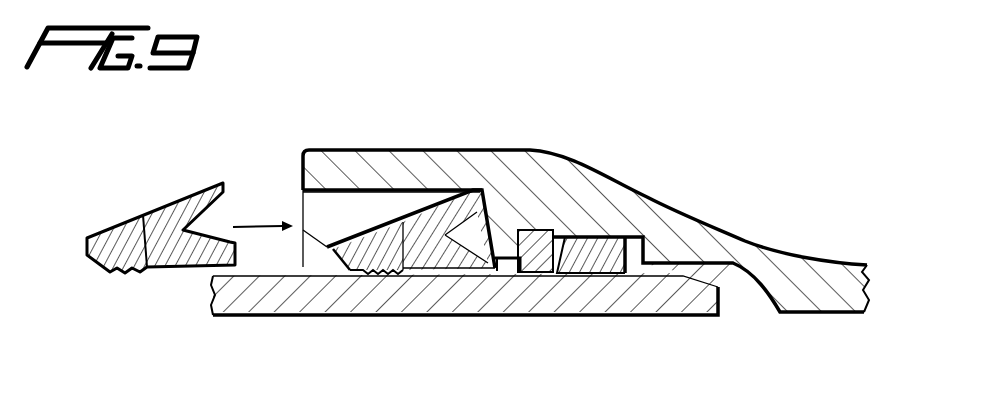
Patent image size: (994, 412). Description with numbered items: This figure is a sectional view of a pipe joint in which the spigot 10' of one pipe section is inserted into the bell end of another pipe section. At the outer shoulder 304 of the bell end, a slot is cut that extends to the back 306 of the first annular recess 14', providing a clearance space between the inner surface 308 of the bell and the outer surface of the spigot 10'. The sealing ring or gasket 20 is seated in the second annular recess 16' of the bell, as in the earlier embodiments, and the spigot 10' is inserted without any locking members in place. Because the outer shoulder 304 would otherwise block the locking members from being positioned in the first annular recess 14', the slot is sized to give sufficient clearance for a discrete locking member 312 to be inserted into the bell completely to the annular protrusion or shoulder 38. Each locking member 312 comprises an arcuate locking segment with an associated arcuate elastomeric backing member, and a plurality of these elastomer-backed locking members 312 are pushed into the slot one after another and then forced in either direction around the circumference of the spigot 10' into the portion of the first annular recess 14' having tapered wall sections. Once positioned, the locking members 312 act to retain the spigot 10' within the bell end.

The spigot 10' is at (431, 314).
The first annular recess 14' is at (327, 302).
The second annular recess 16' is at (584, 192).
The sealing ring or gasket 20 is at (603, 271).
The annular protrusion or shoulder 38 is at (503, 271).
The outer shoulder 304 is at (303, 198).
The back of first annular recess 306 is at (487, 197).
The inner surface of the bell 308 is at (317, 208).
The discrete locking member 312 is at (123, 214).